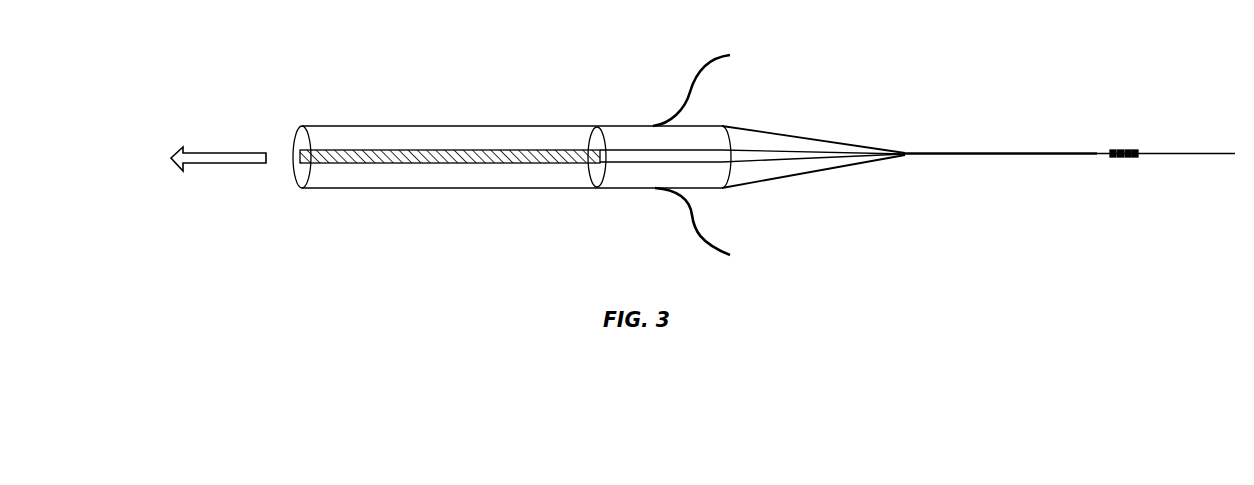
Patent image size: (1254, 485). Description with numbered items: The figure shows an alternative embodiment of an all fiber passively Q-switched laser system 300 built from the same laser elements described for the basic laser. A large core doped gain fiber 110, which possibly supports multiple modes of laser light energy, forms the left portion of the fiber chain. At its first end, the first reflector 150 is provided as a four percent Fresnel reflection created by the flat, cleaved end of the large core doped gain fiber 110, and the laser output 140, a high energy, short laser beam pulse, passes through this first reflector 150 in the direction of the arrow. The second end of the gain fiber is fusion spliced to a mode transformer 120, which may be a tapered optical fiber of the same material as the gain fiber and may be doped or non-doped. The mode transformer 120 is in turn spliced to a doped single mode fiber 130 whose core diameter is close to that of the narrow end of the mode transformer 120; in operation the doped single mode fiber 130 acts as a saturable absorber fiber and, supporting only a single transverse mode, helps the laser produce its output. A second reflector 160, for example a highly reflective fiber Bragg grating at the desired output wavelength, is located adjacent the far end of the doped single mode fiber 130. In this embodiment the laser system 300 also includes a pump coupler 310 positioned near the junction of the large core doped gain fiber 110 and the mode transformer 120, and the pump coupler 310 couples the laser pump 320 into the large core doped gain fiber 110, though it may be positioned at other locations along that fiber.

The laser system 300 is at (441, 107).
The large core doped gain fiber 110 is at (431, 189).
The pump coupler 310 is at (621, 125).
The first reflector 150 is at (293, 127).
The mode transformer 120 is at (803, 133).
The doped single mode fiber 130 is at (991, 122).
The second reflector 160 is at (1125, 159).
The laser output 140 is at (238, 164).
The laser pump 320 is at (697, 70).